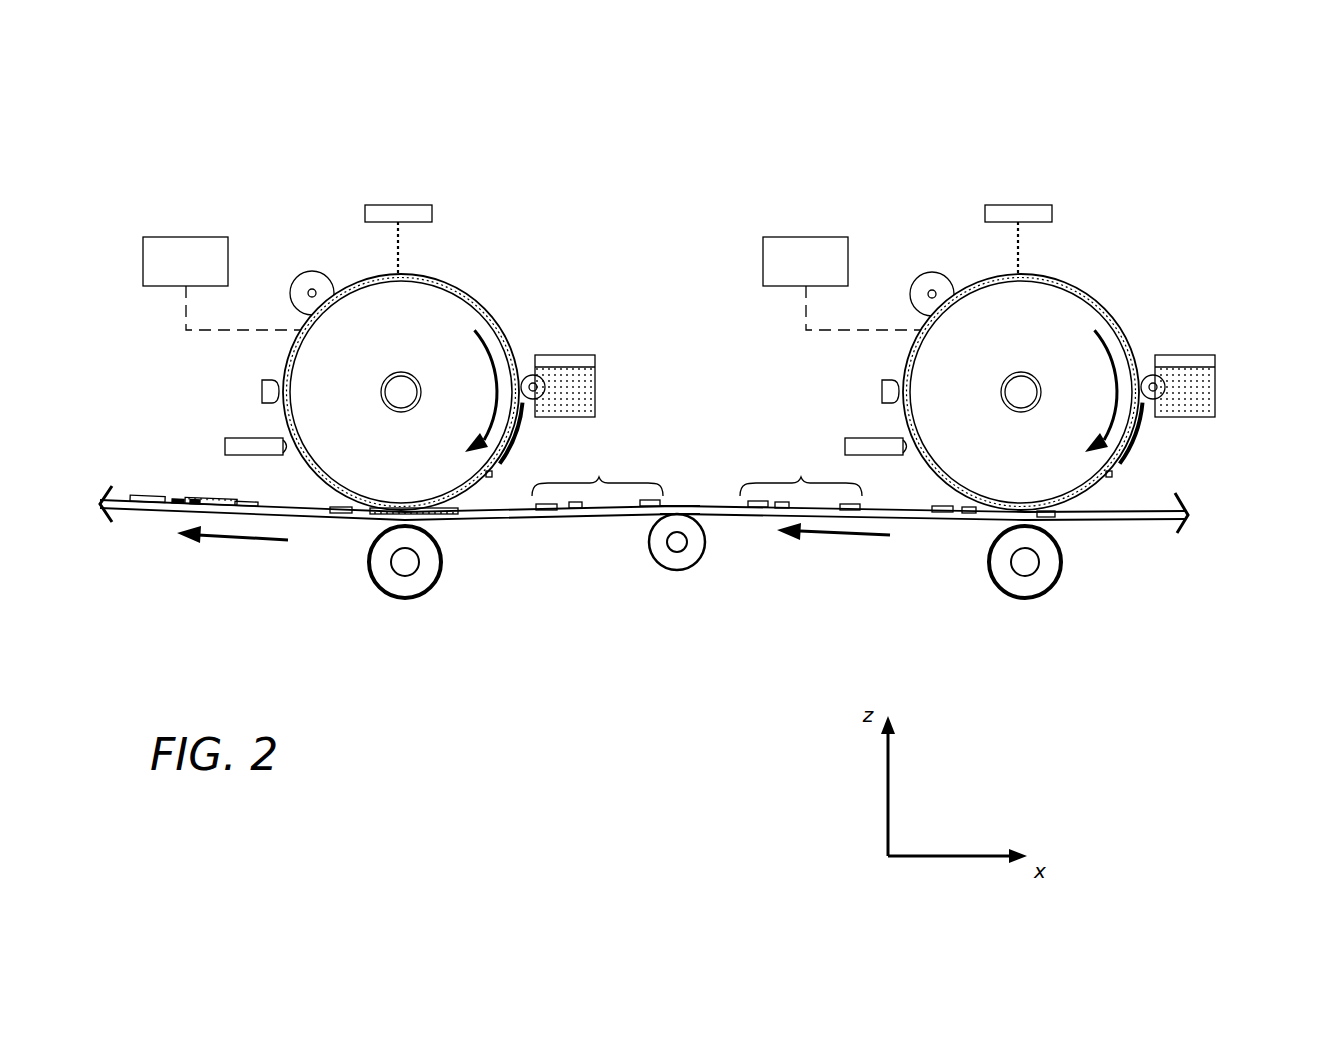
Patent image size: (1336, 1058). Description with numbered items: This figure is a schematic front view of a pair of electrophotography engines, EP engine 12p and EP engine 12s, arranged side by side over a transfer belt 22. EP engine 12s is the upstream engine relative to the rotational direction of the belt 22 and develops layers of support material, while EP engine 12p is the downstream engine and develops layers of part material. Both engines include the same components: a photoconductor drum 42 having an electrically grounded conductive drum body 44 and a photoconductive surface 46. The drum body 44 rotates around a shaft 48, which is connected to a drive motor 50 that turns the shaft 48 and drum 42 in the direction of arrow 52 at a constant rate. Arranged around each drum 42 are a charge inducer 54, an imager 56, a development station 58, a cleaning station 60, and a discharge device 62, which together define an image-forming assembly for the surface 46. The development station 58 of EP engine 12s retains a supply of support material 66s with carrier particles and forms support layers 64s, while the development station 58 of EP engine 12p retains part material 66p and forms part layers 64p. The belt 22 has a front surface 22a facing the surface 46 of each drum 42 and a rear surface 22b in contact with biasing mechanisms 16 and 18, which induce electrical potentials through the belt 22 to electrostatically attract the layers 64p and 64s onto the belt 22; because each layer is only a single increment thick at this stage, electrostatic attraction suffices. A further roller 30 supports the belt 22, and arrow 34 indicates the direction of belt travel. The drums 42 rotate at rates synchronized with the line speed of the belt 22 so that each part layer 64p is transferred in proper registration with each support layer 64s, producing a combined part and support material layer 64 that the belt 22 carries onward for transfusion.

The EP engine 12p is at (500, 195).
The EP engine 12s is at (1120, 195).
The biasing mechanism 16 is at (1045, 570).
The biasing mechanism 18 is at (425, 570).
The transfer belt 22 is at (1155, 540).
The front surface 22a is at (708, 506).
The rear surface 22b is at (712, 516).
The belt roller 30 is at (680, 566).
The belt movement direction 34 is at (232, 544).
The photoconductor drum 42 is at (749, 372).
The conductive drum body 44 is at (388, 467).
The photoconductive surface 46 is at (454, 284).
The shaft 48 is at (392, 390).
The drive motor 50 is at (155, 237).
The arrow 52 is at (492, 359).
The charge inducer 54 is at (322, 273).
The imager 56 is at (382, 205).
The development station 58 is at (606, 347).
The cleaning station 60 is at (242, 438).
The discharge device 62 is at (263, 382).
The combined part and support material layer 64 is at (180, 490).
The part layer 64p is at (530, 446).
The support layer 64s is at (1195, 470).
The part material 66p is at (580, 382).
The support material 66s is at (1200, 398).